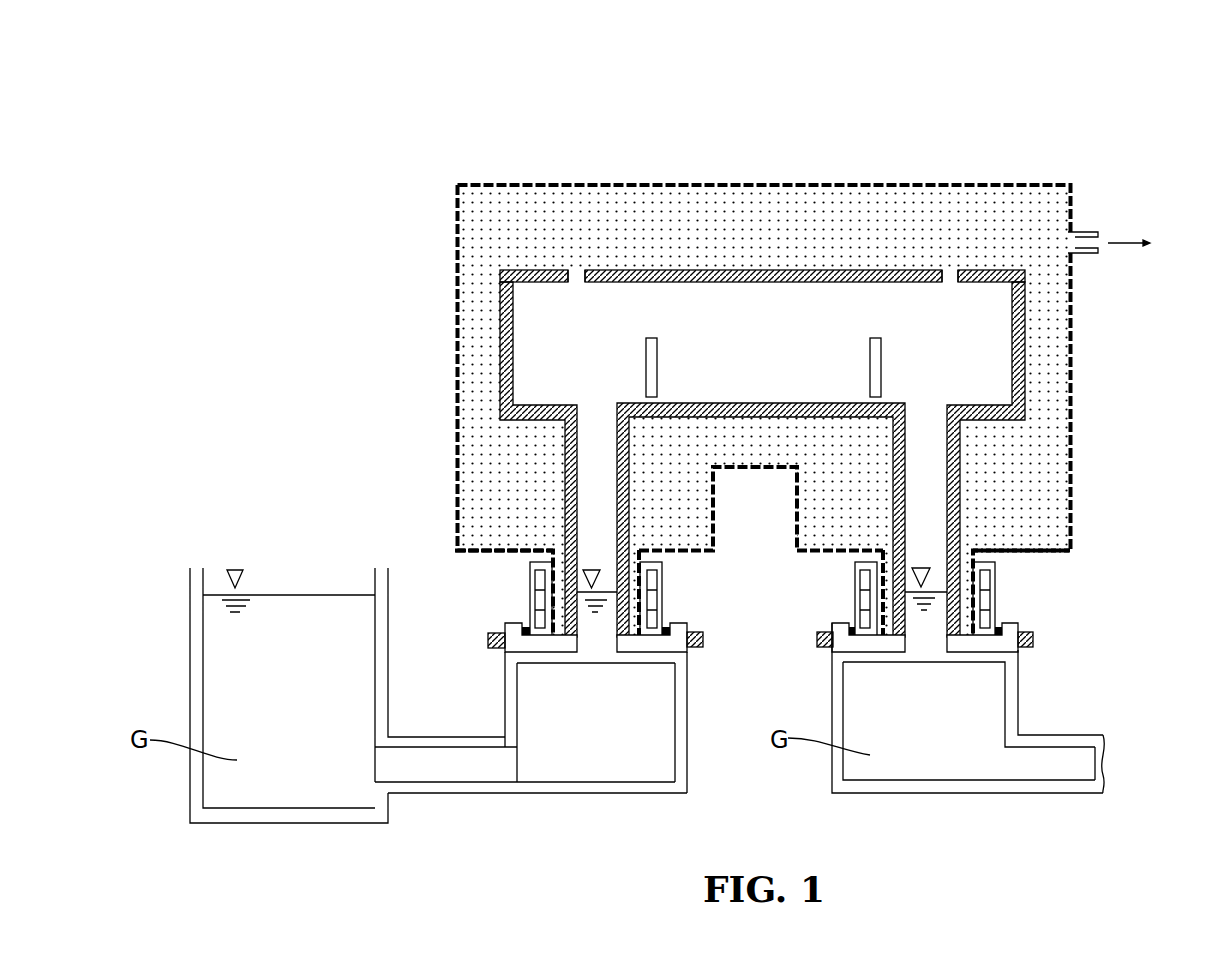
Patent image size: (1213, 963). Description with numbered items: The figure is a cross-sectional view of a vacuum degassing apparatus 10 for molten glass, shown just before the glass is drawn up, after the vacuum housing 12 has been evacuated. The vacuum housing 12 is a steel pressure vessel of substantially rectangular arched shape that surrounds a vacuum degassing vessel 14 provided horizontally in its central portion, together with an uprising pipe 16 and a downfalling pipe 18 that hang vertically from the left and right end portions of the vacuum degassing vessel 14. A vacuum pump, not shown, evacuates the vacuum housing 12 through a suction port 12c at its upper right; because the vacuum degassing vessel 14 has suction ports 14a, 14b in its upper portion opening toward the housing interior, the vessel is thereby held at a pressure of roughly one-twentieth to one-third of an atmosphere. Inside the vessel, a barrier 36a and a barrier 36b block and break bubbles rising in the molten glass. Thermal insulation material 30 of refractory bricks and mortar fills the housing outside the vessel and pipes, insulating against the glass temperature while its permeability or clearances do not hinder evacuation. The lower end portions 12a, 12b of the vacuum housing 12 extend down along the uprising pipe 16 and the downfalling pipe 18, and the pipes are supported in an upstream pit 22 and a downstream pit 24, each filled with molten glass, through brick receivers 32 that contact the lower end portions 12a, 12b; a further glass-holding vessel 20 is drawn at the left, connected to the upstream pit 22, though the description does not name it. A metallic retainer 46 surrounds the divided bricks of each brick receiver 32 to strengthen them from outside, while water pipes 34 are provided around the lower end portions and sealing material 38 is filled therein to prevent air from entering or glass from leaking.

The vacuum degassing apparatus 10 is at (868, 102).
The vacuum housing 12 is at (643, 182).
The lower end portion of vacuum housing 12a is at (530, 562).
The lower end portion of vacuum housing 12b is at (1070, 553).
The suction port 12c is at (1083, 237).
The vacuum degassing vessel 14 is at (697, 270).
The suction port 14a is at (578, 270).
The suction port 14b is at (951, 270).
The uprising pipe 16 is at (645, 535).
The downfalling pipe 18 is at (960, 505).
The melting vessel 20 is at (383, 680).
The upstream pit 22 is at (683, 688).
The downstream pit 24 is at (1010, 700).
The thermal insulation material 30 is at (780, 445).
The brick receiver 32 is at (687, 653).
The water pipe 34 is at (530, 565).
The barrier 36a is at (652, 352).
The barrier 36b is at (876, 352).
The sealing material 38 is at (527, 630).
The metallic retainer 46 is at (487, 637).